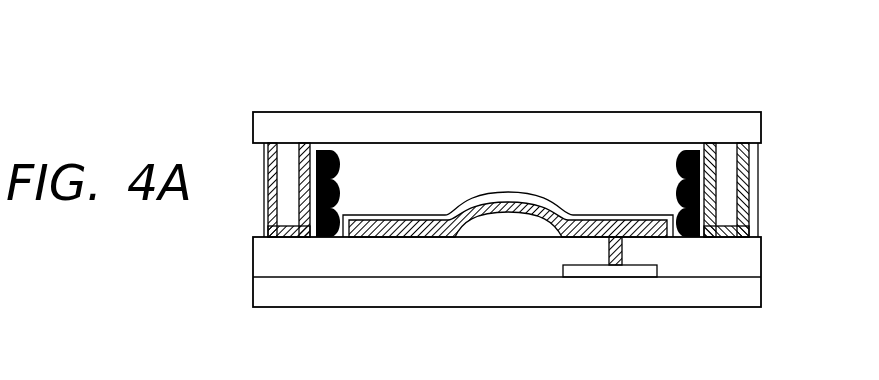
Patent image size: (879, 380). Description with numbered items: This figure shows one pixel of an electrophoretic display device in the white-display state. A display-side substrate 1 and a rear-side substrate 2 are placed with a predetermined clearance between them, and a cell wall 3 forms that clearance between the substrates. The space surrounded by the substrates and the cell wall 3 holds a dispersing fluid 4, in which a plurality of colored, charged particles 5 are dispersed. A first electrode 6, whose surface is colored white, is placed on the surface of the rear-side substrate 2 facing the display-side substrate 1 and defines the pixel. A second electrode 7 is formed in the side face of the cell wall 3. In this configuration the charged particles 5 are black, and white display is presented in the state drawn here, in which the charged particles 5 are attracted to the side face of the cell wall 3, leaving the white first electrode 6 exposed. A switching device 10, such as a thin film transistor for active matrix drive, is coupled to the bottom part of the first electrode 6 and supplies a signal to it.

The display-side substrate 1 is at (722, 128).
The rear-side substrate 2 is at (745, 292).
The cell wall 3 is at (727, 172).
The dispersing fluid 4 is at (630, 166).
The charged particles 5 is at (328, 152).
The first electrode 6 is at (390, 238).
The second electrode 7 is at (289, 226).
The switching device 10 is at (587, 272).